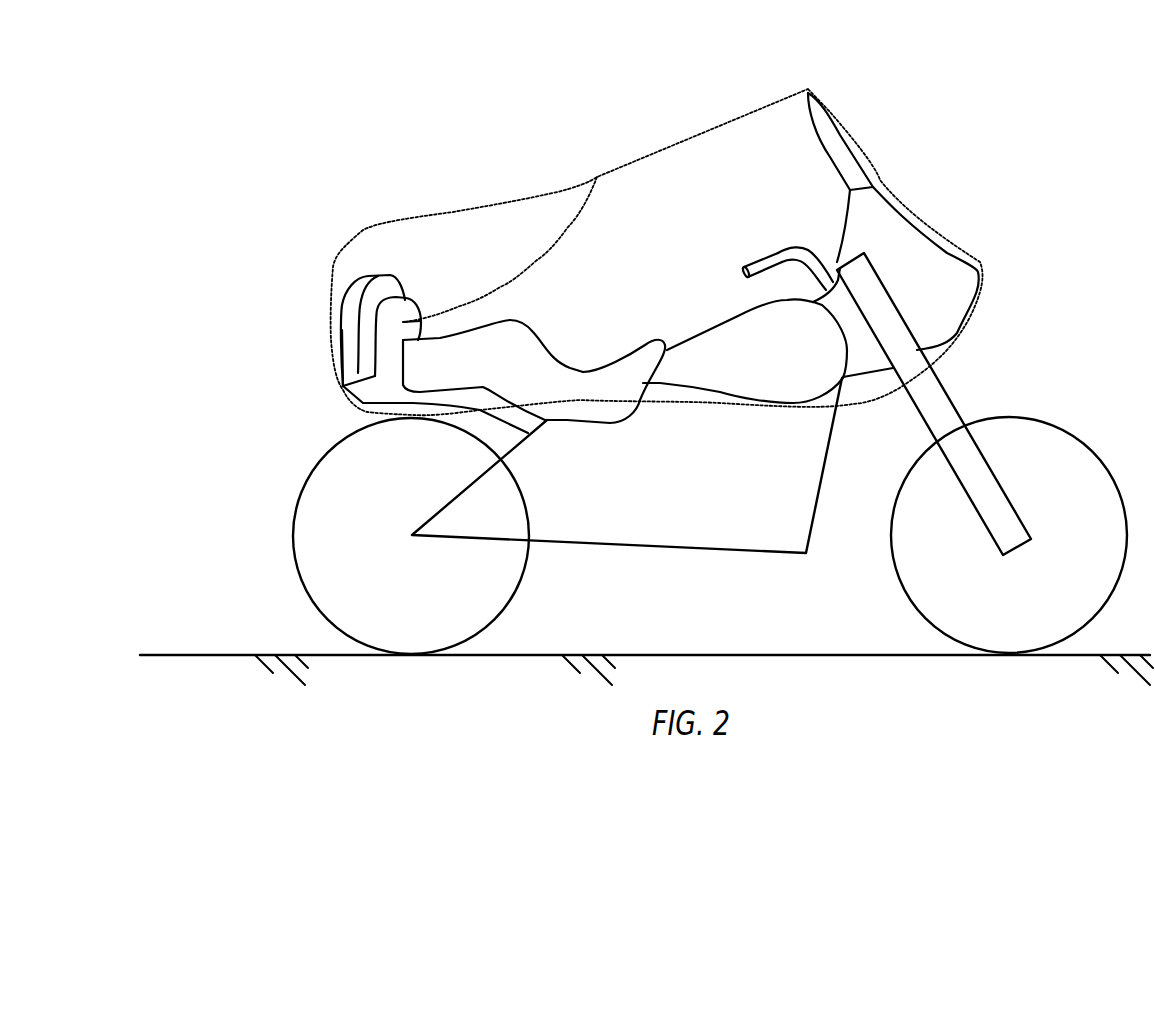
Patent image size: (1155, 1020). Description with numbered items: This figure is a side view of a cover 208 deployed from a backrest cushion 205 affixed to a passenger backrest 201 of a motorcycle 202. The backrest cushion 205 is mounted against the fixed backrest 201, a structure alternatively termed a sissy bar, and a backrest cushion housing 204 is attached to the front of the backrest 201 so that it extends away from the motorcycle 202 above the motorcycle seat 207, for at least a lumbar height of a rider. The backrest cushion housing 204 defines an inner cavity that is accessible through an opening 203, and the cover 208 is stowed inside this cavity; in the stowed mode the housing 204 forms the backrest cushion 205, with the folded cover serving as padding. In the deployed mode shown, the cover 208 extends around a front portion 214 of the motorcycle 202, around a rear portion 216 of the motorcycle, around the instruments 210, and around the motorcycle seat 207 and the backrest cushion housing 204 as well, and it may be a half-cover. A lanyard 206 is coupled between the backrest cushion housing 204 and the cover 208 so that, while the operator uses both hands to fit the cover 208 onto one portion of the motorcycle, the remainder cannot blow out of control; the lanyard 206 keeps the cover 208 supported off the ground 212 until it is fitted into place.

The backrest 201 is at (338, 318).
The motorcycle 202 is at (303, 512).
The opening 203 is at (420, 336).
The backrest cushion housing 204 is at (420, 294).
The backrest cushion 205 is at (368, 339).
The lanyard 206 is at (568, 227).
The motorcycle seat 207 is at (570, 368).
The cover 208 is at (655, 151).
The instruments 210 is at (846, 242).
The ground 212 is at (208, 654).
The front portion 214 is at (955, 239).
The rear portion 216 is at (304, 332).